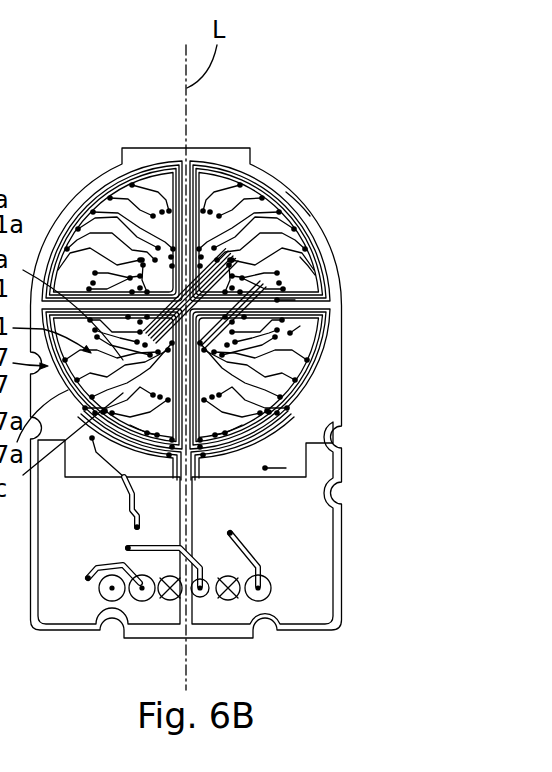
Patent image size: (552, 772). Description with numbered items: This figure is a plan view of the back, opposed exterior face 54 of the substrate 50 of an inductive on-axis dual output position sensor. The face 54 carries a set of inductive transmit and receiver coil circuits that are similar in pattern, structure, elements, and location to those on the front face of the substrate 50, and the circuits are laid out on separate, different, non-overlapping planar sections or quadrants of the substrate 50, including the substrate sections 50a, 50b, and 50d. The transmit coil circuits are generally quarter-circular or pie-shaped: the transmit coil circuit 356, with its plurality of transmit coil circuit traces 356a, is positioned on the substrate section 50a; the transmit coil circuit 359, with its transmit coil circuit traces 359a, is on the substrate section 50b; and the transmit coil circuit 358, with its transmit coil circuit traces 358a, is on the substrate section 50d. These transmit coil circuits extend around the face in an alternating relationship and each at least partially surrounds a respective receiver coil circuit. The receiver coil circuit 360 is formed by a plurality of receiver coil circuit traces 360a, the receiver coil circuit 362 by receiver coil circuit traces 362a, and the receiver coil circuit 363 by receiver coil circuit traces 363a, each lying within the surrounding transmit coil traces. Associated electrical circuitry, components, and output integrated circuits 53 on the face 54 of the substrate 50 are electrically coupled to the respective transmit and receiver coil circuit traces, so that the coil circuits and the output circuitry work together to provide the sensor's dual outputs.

The substrate 50 is at (70, 638).
The substrate section 50a is at (283, 245).
The substrate section 50b is at (117, 213).
The substrate section 50d is at (281, 346).
The output integrated circuits 53 is at (250, 592).
The opposed exterior face 54 is at (323, 547).
The transmit coil circuit 356 is at (288, 190).
The transmit coil circuit traces 356a is at (300, 257).
The transmit coil circuit 358 is at (318, 370).
The transmit coil circuit traces 358a is at (302, 390).
The transmit coil circuit 359 is at (100, 181).
The transmit coil circuit traces 359a is at (73, 213).
The receiver coil circuit 360 is at (248, 200).
The receiver coil circuit traces 360a is at (240, 180).
The receiver coil circuit 362 is at (290, 333).
The receiver coil circuit traces 362a is at (277, 300).
The receiver coil circuit 363 is at (133, 203).
The receiver coil circuit traces 363a is at (152, 207).